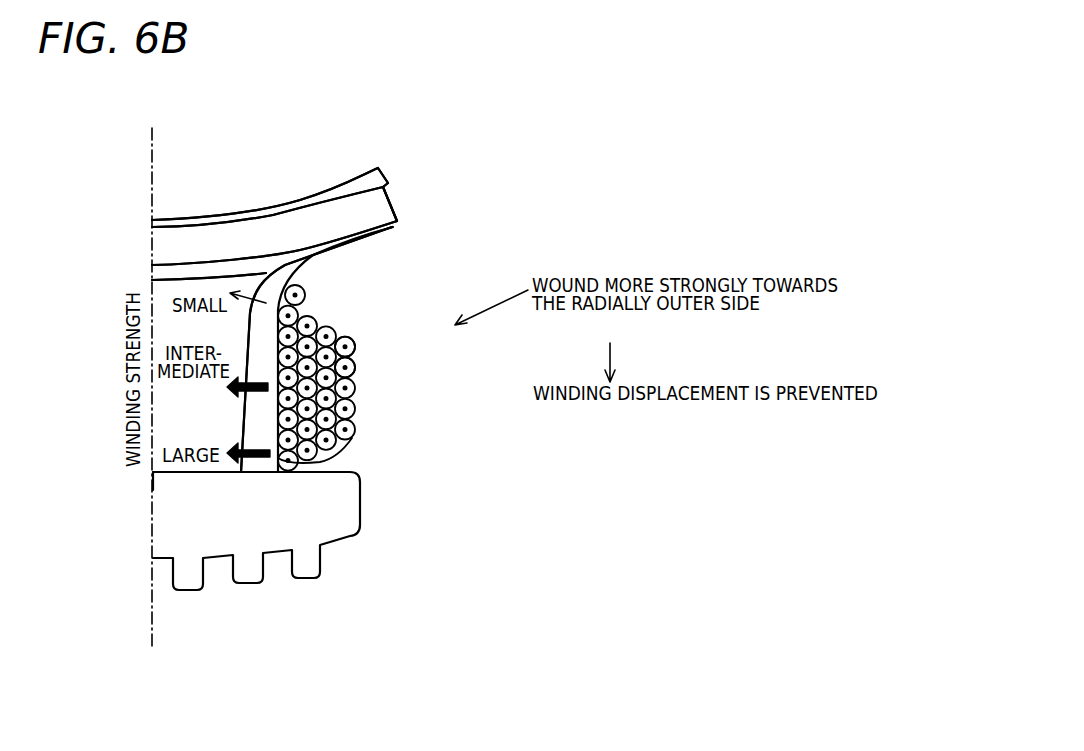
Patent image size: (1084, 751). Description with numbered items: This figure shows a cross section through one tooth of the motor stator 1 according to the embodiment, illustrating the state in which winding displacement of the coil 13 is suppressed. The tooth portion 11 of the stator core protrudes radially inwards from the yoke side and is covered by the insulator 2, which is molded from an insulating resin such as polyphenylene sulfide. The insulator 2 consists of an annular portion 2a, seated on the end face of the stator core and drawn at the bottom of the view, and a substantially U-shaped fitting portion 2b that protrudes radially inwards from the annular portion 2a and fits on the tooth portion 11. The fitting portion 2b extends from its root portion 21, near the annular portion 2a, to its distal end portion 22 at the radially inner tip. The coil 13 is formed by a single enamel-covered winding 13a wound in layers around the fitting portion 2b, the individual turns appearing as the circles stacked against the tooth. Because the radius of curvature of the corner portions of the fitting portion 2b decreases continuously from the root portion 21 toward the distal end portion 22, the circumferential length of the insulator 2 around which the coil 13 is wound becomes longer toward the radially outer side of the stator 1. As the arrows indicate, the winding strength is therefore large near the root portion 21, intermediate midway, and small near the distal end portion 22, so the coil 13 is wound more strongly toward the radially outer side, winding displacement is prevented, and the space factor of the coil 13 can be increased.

The motor stator 1 is at (347, 174).
The tooth portion 11 is at (273, 207).
The insulator 2 is at (388, 197).
The annular portion 2a is at (212, 540).
The fitting portion 2b is at (200, 288).
The coil 13 is at (513, 382).
The winding 13a is at (352, 346).
The root portion 21 is at (352, 438).
The distal end portion 22 is at (393, 228).